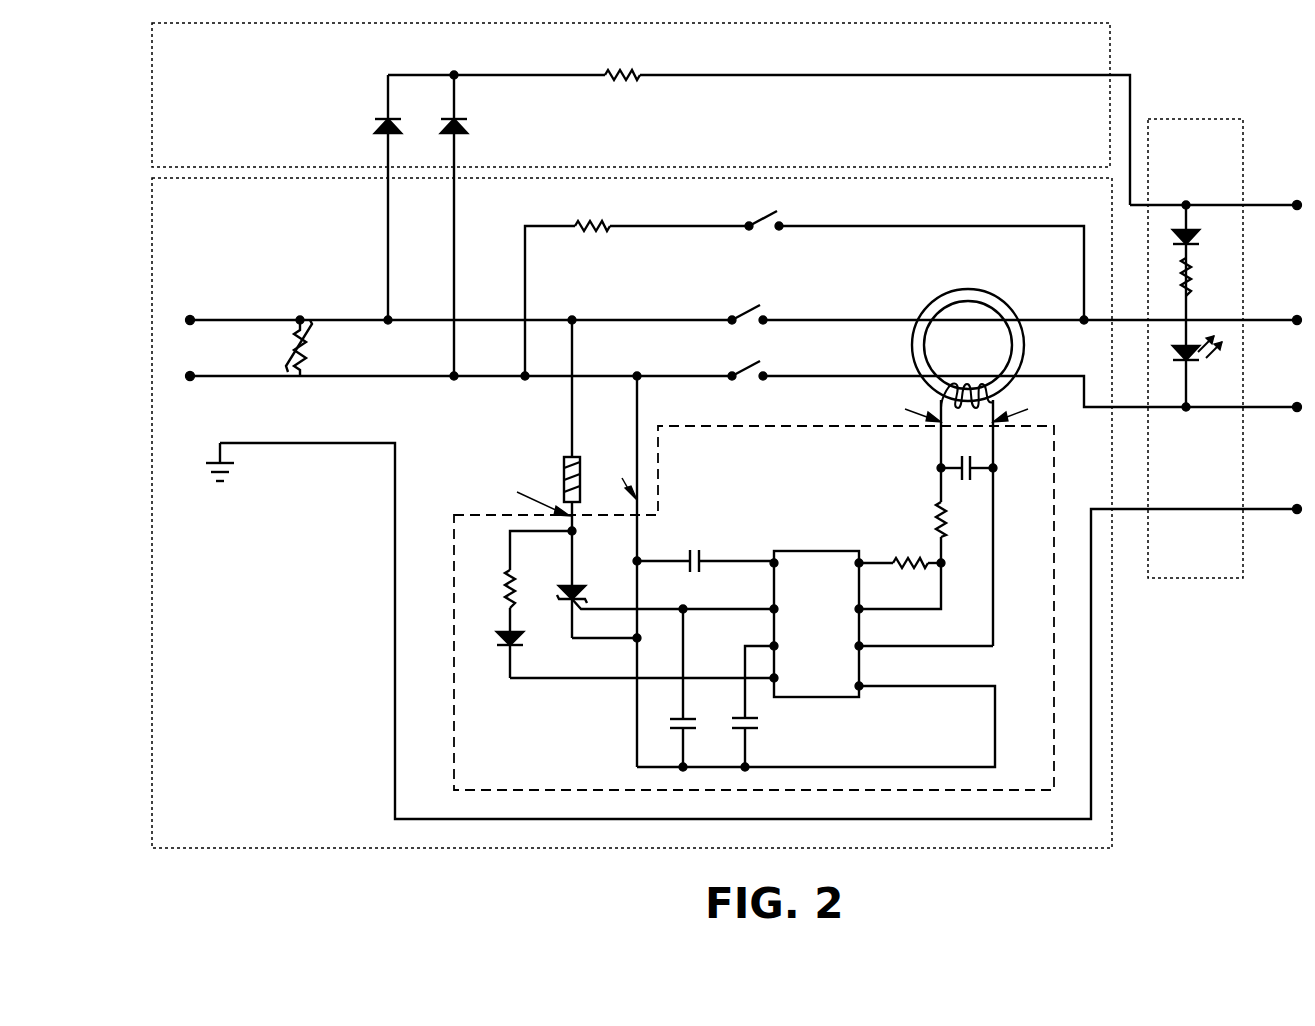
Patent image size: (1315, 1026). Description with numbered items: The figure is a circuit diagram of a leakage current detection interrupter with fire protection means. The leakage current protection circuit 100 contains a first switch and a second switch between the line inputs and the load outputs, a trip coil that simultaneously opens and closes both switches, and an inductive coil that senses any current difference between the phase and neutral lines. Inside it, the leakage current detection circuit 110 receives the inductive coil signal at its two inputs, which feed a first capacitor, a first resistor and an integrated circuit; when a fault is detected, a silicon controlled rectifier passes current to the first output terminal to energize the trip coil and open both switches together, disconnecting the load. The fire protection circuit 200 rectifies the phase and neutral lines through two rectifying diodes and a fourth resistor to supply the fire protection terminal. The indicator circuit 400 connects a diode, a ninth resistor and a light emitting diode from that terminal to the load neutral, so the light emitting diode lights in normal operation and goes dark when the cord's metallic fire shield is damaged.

The leakage current protection circuit 100 is at (205, 838).
The fire protection circuit 200 is at (208, 158).
The indicator circuit 400 is at (1218, 150).
The leakage current detection circuit 110 is at (1060, 745).